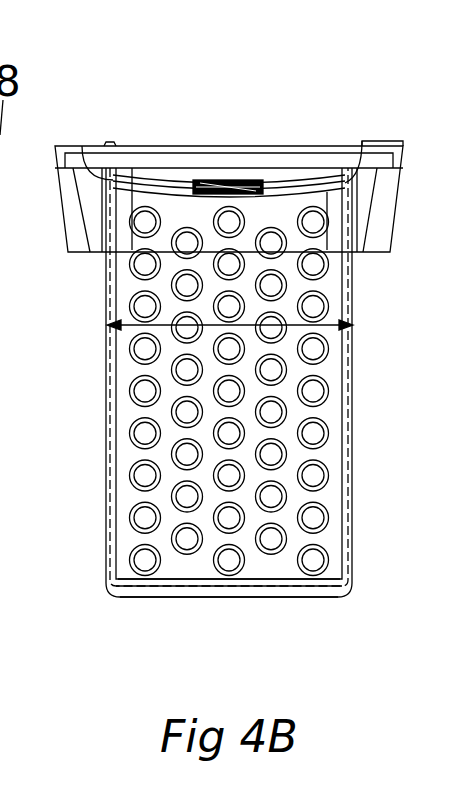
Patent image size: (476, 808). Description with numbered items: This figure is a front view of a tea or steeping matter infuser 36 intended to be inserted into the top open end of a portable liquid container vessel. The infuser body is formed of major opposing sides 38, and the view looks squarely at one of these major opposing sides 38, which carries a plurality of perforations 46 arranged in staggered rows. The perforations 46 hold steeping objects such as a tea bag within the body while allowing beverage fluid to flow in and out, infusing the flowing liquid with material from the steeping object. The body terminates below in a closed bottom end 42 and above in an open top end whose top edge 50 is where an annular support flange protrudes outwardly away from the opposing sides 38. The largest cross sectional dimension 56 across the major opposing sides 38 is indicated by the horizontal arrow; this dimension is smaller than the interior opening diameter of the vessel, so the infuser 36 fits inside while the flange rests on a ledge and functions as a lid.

The infuser 36 is at (213, 88).
The top edge 50 is at (345, 183).
The largest cross sectional dimension 56 is at (293, 325).
The major opposing sides 38 is at (330, 537).
The closed bottom end 42 is at (150, 588).
The perforations 46 is at (146, 477).